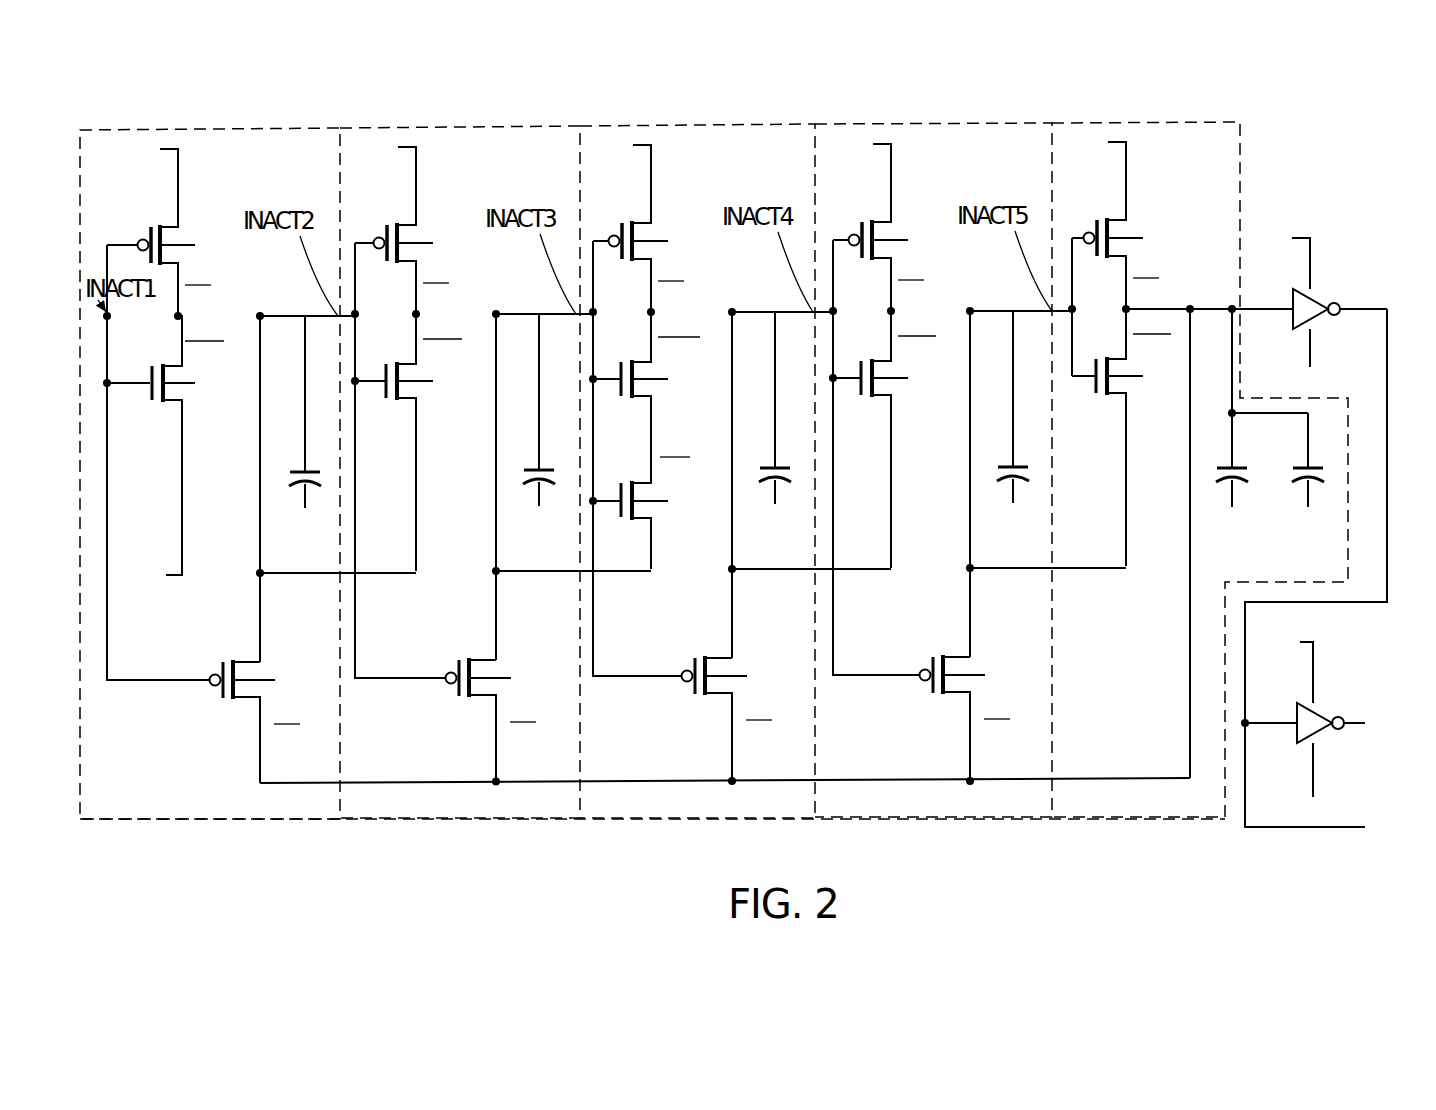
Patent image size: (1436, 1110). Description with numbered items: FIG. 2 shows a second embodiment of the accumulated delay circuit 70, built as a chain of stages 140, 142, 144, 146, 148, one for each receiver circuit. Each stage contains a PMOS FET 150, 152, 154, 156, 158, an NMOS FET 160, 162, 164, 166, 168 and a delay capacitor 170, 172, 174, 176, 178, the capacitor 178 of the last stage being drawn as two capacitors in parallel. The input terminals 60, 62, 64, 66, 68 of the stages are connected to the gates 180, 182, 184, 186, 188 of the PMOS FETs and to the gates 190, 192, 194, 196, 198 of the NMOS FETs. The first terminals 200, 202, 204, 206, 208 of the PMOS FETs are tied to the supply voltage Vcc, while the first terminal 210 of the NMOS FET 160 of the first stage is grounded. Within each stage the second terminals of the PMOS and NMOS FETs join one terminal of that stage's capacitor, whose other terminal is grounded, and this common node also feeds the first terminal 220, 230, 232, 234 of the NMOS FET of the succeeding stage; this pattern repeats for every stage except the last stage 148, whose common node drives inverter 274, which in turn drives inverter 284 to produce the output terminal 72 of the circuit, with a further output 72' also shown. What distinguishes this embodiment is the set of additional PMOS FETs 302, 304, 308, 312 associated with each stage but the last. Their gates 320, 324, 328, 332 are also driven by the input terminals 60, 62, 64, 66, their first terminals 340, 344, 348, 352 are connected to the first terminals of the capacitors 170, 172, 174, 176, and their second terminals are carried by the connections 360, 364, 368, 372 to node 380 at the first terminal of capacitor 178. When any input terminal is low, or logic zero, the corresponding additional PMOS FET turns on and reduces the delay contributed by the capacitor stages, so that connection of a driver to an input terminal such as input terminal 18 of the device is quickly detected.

The stage 140 is at (213, 160).
The stage 142 is at (453, 160).
The stage 144 is at (685, 157).
The stage 146 is at (925, 155).
The stage 148 is at (1140, 153).
The PMOS FET 150 is at (172, 236).
The PMOS FET 152 is at (410, 236).
The PMOS FET 154 is at (645, 236).
The PMOS FET 156 is at (885, 236).
The PMOS FET 158 is at (1120, 236).
The NMOS FET 160 is at (199, 432).
The NMOS FET 162 is at (437, 432).
The NMOS FET 164 is at (699, 430).
The NMOS FET 166 is at (912, 432).
The NMOS FET 168 is at (1147, 432).
The delay capacitor 170 is at (301, 470).
The delay capacitor 172 is at (536, 470).
The delay capacitor 174 is at (772, 470).
The delay capacitor 176 is at (1010, 470).
The delay capacitor 178 is at (1270, 522).
The input terminal 18 is at (1310, 474).
The gate 180 is at (137, 243).
The gate 182 is at (373, 243).
The gate 184 is at (608, 243).
The gate 186 is at (848, 243).
The gate 188 is at (1083, 243).
The gate 190 is at (109, 386).
The gate 192 is at (357, 386).
The gate 194 is at (595, 386).
The gate 196 is at (835, 386).
The gate 198 is at (1072, 386).
The first terminal 200 is at (162, 222).
The first terminal 202 is at (400, 222).
The first terminal 204 is at (634, 222).
The first terminal 206 is at (874, 222).
The first terminal 208 is at (1109, 222).
The first terminal 210 is at (182, 471).
The first input terminal 220 is at (416, 471).
The first terminal 230 is at (651, 436).
The source connection of transistor I15 232 is at (891, 471).
The source connection of transistor I19 234 is at (1126, 471).
The inverter 274 is at (1345, 218).
The inverter 284 is at (1362, 637).
The PMOS transistor I4 302 is at (226, 714).
The additional PMOS FET 304 is at (462, 714).
The additional PMOS FET 308 is at (698, 714).
The additional PMOS FET 312 is at (936, 714).
The gate 320 is at (212, 689).
The gate 324 is at (448, 689).
The gate 328 is at (684, 689).
The gate 332 is at (922, 689).
The first terminal 340 is at (262, 607).
The first terminal 344 is at (498, 607).
The first terminal 348 is at (734, 607).
The first terminal 352 is at (972, 607).
The bottom rail line 360 is at (262, 769).
The bottom rail node 364 is at (498, 769).
The bottom rail node 368 is at (734, 769).
The bottom rail node 372 is at (972, 769).
The node 380 is at (1192, 312).
The input terminal 60 is at (108, 328).
The input terminal 62 is at (341, 318).
The input terminal 64 is at (578, 318).
The input terminal 66 is at (814, 318).
The input terminal 68 is at (1053, 318).
The accumulated delay circuit 70 is at (600, 833).
The output terminal 72 is at (1386, 737).
The INACT output 72' is at (1337, 837).